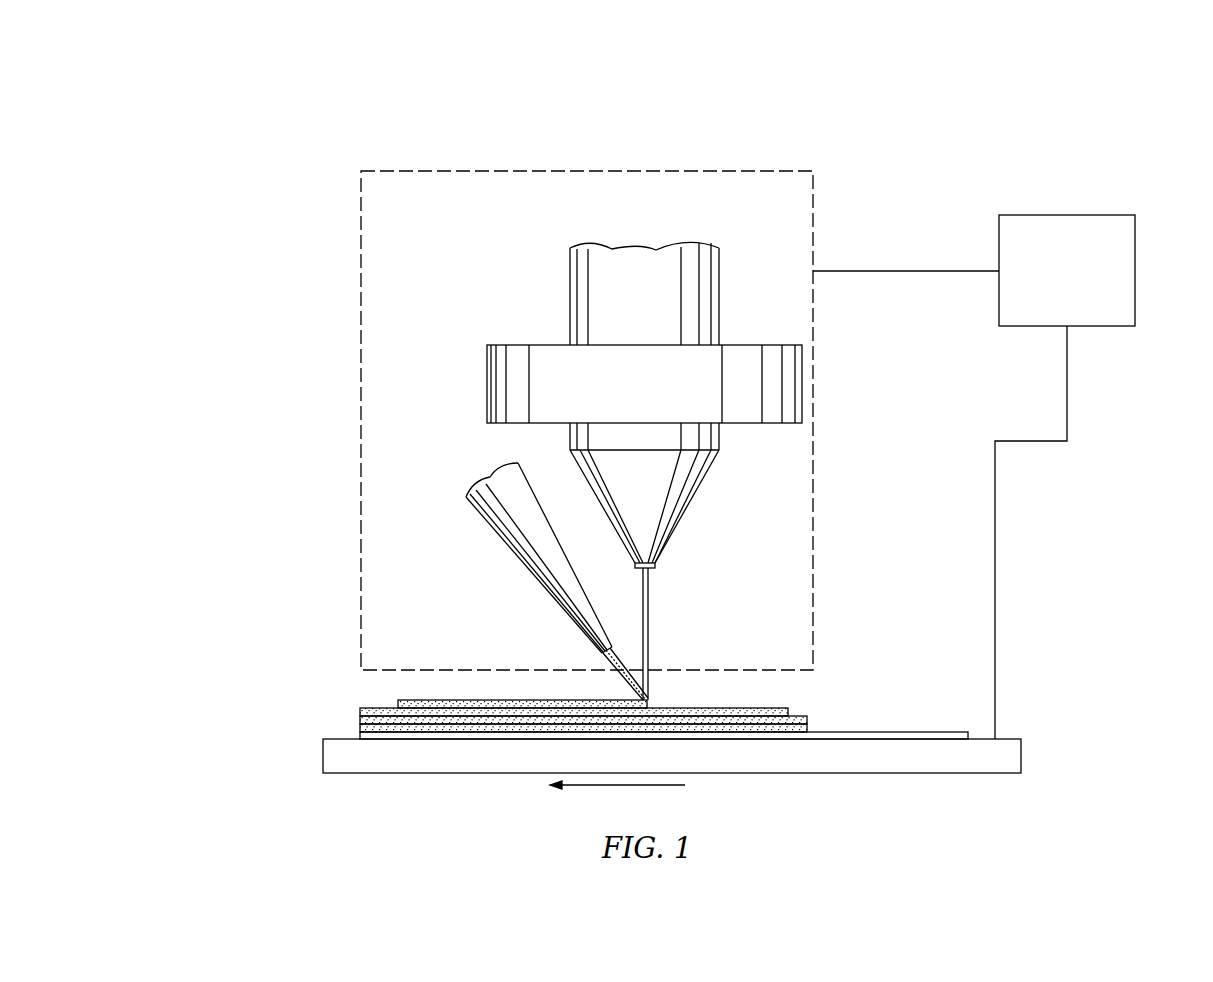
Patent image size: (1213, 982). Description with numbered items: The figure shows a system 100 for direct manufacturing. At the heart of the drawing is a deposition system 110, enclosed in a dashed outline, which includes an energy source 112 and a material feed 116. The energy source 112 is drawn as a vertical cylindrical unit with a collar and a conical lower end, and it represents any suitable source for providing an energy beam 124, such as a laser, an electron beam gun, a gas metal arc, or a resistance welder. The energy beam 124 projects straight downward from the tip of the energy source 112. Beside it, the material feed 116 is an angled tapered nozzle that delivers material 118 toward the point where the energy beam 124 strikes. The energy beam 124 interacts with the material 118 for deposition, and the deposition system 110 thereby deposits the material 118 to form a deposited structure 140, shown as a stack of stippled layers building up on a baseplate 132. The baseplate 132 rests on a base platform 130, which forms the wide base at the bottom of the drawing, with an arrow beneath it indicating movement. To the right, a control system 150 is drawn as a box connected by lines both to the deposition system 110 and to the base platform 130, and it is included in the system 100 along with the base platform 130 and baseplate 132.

The system for direct manufacturing 100 is at (1102, 140).
The deposition system 110 is at (405, 170).
The energy source 112 is at (663, 245).
The material feed 116 is at (475, 517).
The material 118 is at (630, 683).
The energy beam 124 is at (650, 640).
The base platform 130 is at (1021, 748).
The baseplate 132 is at (850, 731).
The deposited structure 140 is at (360, 712).
The control system 150 is at (1052, 308).